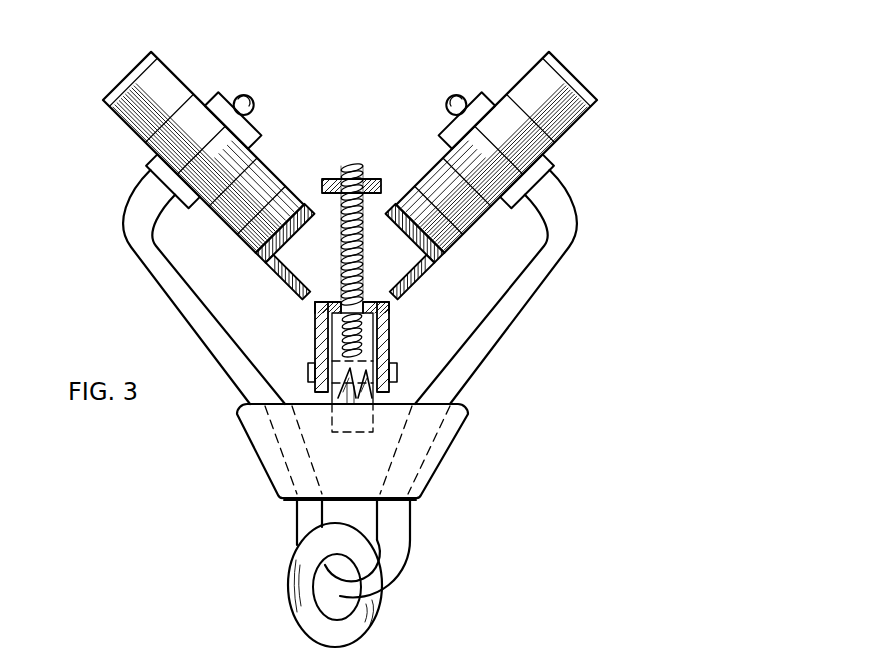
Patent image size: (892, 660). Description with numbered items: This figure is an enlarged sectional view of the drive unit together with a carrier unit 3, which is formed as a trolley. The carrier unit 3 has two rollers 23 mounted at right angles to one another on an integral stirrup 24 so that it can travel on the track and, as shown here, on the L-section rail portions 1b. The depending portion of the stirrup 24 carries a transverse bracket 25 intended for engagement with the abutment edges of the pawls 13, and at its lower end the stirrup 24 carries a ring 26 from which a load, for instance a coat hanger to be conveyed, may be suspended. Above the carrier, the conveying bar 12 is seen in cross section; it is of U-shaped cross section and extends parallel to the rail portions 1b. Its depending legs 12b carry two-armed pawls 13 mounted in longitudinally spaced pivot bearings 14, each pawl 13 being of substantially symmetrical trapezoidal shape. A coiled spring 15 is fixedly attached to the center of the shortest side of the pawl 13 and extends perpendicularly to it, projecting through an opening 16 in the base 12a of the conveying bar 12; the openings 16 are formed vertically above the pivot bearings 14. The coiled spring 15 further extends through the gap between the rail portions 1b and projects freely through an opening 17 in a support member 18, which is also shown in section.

The L-section rail portions 1b is at (292, 233).
The carrier unit 3 is at (502, 401).
The conveying bar 12 is at (368, 329).
The base of conveying bar 12a is at (368, 304).
The depending legs of conveying bar 12b is at (315, 340).
The two-armed pawl 13 is at (370, 347).
The pivot bearing 14 is at (308, 373).
The coiled spring 15 is at (352, 166).
The opening in base of conveying bar 16 is at (345, 304).
The opening in support member 17 is at (335, 181).
The support member 18 is at (372, 181).
The roller 23 is at (150, 106).
The stirrup 24 is at (157, 263).
The transverse bracket 25 is at (443, 468).
The ring 26 is at (367, 610).